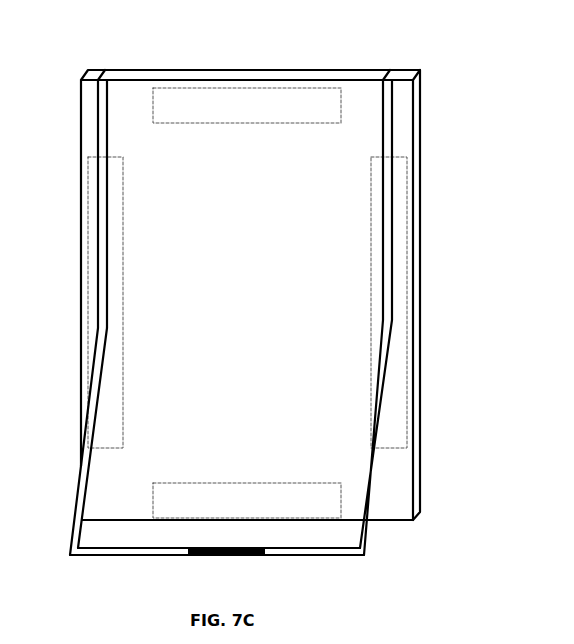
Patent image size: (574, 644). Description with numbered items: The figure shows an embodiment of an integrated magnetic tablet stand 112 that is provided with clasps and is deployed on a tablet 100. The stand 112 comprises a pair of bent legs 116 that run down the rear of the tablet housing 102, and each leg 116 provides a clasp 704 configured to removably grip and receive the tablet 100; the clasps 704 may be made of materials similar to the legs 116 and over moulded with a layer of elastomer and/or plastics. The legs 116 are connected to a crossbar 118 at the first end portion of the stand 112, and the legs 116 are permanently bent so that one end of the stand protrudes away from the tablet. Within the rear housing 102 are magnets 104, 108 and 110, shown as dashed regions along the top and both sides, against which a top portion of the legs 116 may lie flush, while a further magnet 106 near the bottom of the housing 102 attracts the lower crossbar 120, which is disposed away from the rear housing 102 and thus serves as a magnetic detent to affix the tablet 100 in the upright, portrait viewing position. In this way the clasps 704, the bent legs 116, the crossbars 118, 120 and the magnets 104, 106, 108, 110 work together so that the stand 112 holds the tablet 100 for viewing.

The tablet 100 is at (413, 527).
The tablet housing 102 is at (416, 98).
The magnet 104 is at (245, 88).
The magnet 106 is at (152, 500).
The magnet 108 is at (81, 240).
The magnet 110 is at (407, 227).
The stand 112 is at (337, 568).
The legs 116 is at (86, 418).
The crossbar 118 is at (110, 555).
The lower crossbar 120 is at (228, 557).
The clasp 704 is at (107, 71).